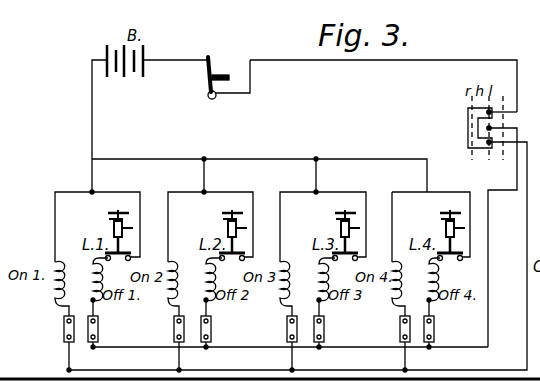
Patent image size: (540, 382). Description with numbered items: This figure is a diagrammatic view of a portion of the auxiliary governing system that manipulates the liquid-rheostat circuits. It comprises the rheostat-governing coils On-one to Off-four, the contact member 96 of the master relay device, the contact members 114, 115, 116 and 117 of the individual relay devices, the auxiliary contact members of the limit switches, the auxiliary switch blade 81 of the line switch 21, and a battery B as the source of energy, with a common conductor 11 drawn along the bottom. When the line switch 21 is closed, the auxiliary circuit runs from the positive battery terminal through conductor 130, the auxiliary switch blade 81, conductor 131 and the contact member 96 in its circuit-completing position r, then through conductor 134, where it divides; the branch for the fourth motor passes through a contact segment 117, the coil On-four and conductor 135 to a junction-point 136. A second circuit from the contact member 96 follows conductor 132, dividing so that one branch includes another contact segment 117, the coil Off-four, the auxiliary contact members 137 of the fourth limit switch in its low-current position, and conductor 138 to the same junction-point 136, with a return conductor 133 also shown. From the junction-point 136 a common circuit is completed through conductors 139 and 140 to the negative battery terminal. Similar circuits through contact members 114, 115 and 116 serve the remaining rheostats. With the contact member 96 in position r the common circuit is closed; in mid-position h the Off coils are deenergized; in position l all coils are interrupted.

The conductor 130 is at (173, 59).
The line switch 21 is at (214, 61).
The auxiliary switch blade 81 is at (208, 72).
The conductor 131 is at (263, 61).
The conductor 140 is at (93, 127).
The conductor 139 is at (417, 158).
The conductor 138 is at (446, 192).
The junction-point 136 is at (413, 227).
The conductor 135 is at (393, 228).
The auxiliary contact members 137 is at (448, 287).
The conductor 134 is at (527, 231).
The conductor 132 is at (488, 305).
The conductor 133 is at (431, 347).
The contact member 96 is at (468, 118).
The contact member 114 is at (75, 324).
The contact member 115 is at (186, 324).
The contact member 116 is at (299, 324).
The contact segment 117 is at (412, 324).
The ground conductor 11 is at (27, 379).